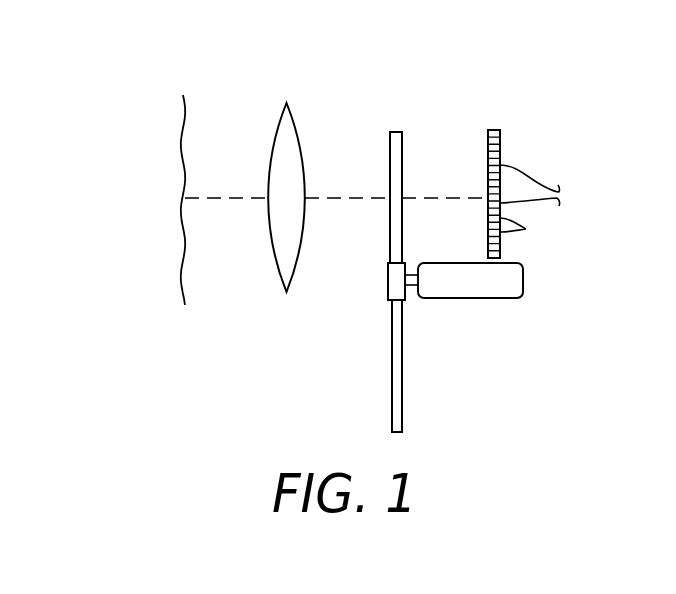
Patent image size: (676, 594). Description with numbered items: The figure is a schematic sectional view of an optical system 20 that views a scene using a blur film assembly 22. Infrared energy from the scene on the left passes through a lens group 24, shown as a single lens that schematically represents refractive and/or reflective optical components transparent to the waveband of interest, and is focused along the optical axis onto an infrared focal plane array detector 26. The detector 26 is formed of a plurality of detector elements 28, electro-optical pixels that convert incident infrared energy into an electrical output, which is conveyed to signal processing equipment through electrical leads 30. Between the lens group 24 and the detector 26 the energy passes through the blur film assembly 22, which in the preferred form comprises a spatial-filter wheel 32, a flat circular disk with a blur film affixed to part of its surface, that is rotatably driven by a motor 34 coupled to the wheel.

The optical system 20 is at (221, 76).
The blur film assembly 22 is at (389, 121).
The lens group 24 is at (273, 130).
The infrared focal plane array detector 26 is at (493, 130).
The detector elements 28 is at (535, 233).
The electrical leads 30 is at (537, 183).
The spatial-filter wheel 32 is at (402, 390).
The motor 34 is at (507, 290).